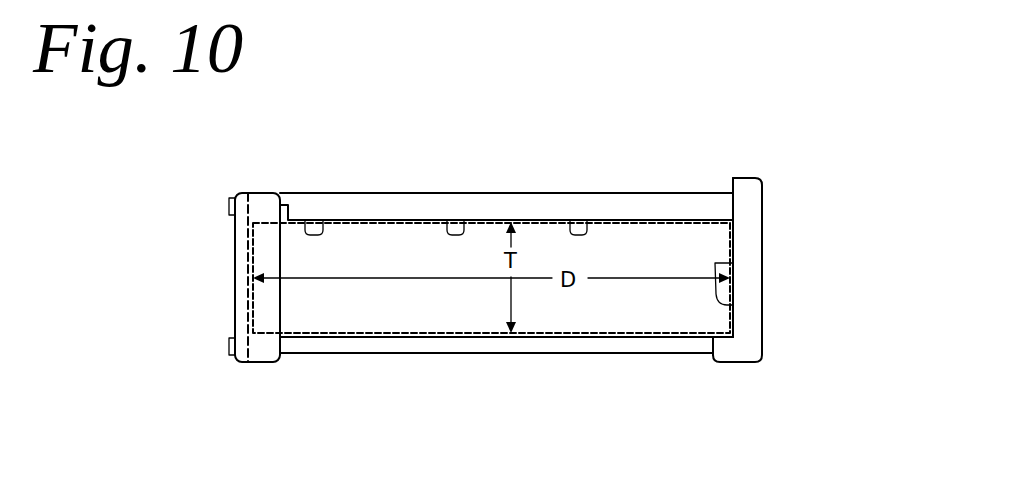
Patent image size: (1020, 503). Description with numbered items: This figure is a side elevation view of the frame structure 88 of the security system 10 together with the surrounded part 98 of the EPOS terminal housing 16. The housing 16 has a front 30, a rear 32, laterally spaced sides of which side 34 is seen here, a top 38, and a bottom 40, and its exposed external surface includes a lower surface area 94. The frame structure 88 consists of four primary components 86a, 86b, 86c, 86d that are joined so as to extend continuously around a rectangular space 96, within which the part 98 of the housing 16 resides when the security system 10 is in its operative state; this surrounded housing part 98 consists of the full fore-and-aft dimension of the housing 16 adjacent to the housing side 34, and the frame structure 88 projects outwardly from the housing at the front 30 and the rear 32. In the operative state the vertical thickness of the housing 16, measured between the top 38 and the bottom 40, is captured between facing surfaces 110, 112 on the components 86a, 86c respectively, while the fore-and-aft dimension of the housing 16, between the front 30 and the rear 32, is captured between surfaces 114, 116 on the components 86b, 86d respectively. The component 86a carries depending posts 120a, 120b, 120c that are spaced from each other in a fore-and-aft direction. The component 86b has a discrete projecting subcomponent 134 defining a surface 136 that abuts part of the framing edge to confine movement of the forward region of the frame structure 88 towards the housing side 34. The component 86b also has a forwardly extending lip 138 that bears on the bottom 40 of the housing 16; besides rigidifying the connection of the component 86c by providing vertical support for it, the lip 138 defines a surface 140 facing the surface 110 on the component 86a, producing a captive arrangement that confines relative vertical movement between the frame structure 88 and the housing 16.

The security system 10 is at (650, 187).
The housing 16 is at (645, 300).
The front 30 is at (743, 228).
The rear 32 is at (235, 315).
The side 34 is at (607, 275).
The top 38 is at (345, 205).
The bottom 40 is at (403, 340).
The component 86a is at (513, 200).
The component 86b is at (757, 252).
The component 86c is at (508, 353).
The component 86d is at (235, 260).
The frame structure 88 is at (564, 188).
The lower surface area 94 is at (443, 348).
The rectangular space 96 is at (369, 230).
The surrounded housing part 98 is at (400, 212).
The facing surface 110 is at (413, 222).
The facing surface 112 is at (473, 333).
The surface 114 is at (728, 308).
The surface 116 is at (288, 192).
The depending post 120a is at (579, 222).
The depending post 120b is at (458, 222).
The depending post 120c is at (315, 222).
The projecting subcomponent 134 is at (722, 290).
The surface 136 is at (727, 294).
The lip 138 is at (728, 348).
The surface 140 is at (723, 333).